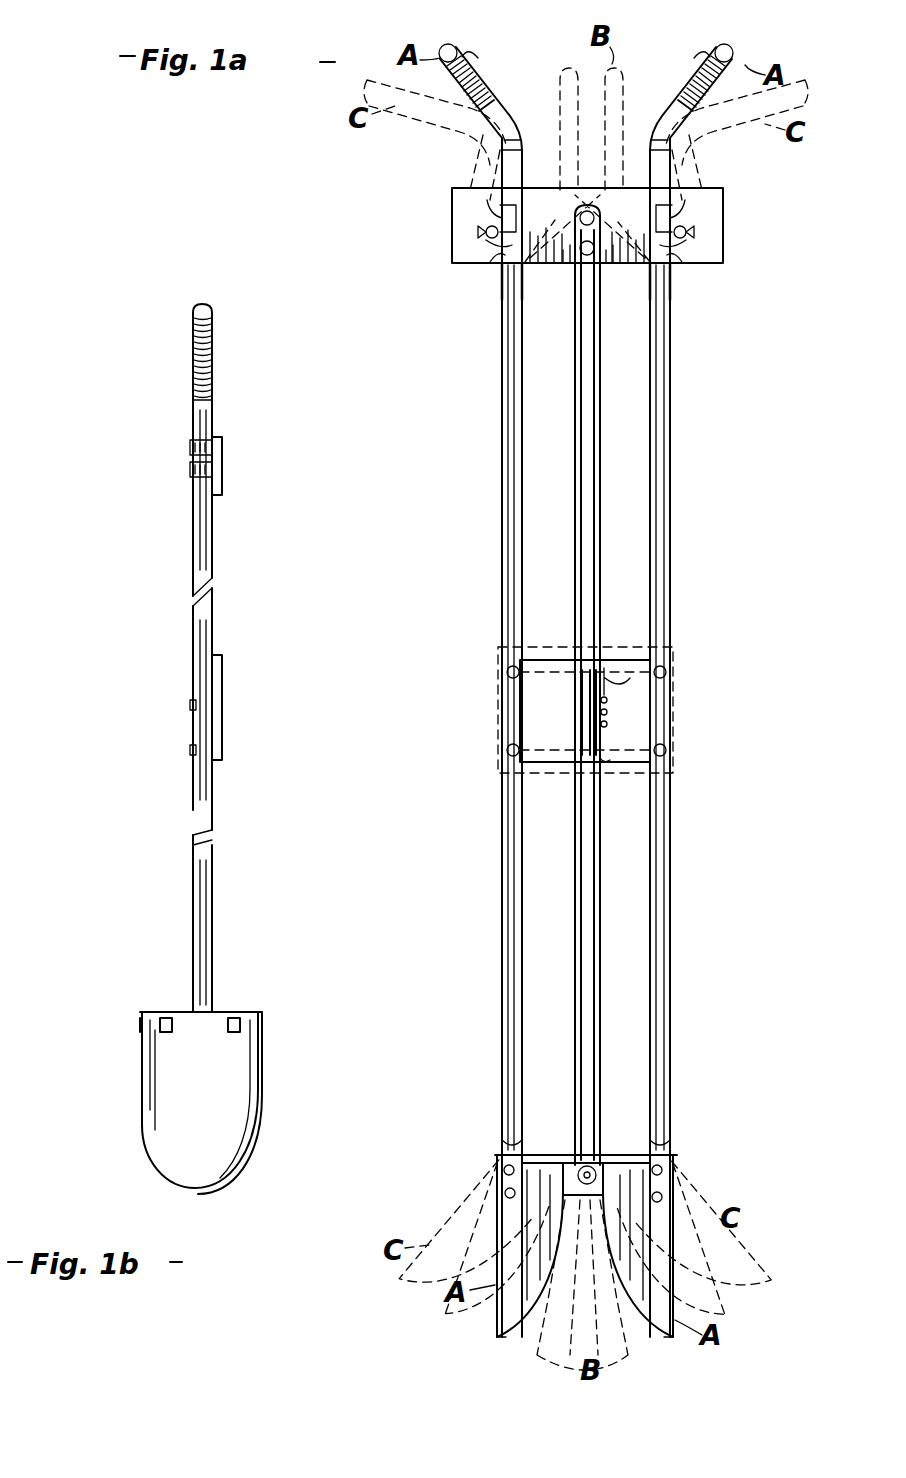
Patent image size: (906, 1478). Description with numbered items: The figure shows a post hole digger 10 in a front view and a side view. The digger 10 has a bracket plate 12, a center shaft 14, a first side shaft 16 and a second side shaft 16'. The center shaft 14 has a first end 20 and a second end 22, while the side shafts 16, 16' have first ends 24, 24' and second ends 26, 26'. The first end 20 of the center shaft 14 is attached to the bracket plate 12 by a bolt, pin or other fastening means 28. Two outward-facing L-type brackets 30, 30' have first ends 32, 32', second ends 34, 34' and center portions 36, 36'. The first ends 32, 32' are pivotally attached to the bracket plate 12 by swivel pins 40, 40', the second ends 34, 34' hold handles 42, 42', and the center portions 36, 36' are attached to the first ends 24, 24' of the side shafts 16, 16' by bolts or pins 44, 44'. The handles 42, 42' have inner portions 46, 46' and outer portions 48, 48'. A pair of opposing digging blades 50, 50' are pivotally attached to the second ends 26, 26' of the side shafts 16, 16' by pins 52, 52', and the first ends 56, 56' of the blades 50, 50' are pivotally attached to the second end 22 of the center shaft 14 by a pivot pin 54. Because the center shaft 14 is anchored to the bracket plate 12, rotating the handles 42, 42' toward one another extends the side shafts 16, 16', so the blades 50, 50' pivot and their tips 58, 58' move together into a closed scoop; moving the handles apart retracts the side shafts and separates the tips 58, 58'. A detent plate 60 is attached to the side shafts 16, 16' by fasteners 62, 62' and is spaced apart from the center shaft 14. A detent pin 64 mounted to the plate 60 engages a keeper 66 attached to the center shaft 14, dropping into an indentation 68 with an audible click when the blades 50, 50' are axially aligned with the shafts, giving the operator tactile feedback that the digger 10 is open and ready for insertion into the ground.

In FIG. 1a, the post hole digger 10 is at (743, 397).
In FIG. 1a, the bracket plate 12 is at (528, 186).
In FIG. 1b, the bracket plate 12 is at (222, 458).
In FIG. 1a, the center shaft 14 is at (576, 387).
In FIG. 1a, the first side shaft 16 is at (482, 763).
In FIG. 1a, the second side shaft 16' is at (691, 763).
In FIG. 1b, the second side shaft 16' is at (176, 658).
In FIG. 1a, the first end of center shaft 20 is at (562, 266).
In FIG. 1a, the second end of center shaft 22 is at (560, 1156).
In FIG. 1a, the first end of first side shaft 24 is at (485, 301).
In FIG. 1b, the first end of first side shaft 24 is at (175, 487).
In FIG. 1a, the first end of second side shaft 24' is at (694, 301).
In FIG. 1a, the second end of first side shaft 26 is at (479, 1135).
In FIG. 1a, the second end of second side shaft 26' is at (694, 1127).
In FIG. 1b, the second end of second side shaft 26' is at (234, 988).
In FIG. 1a, the fastening means 28 is at (598, 205).
In FIG. 1a, the first bracket 30 is at (459, 213).
In FIG. 1a, the second bracket 30' is at (724, 213).
In FIG. 1a, the first end of first bracket 32 is at (457, 257).
In FIG. 1a, the first end of second bracket 32' is at (726, 257).
In FIG. 1a, the second end of first bracket 34 is at (465, 193).
In FIG. 1a, the second end of second bracket 34' is at (716, 193).
In FIG. 1a, the center portion of first bracket 36 is at (555, 273).
In FIG. 1a, the center portion of second bracket 36' is at (622, 273).
In FIG. 1a, the swivel pin 40 is at (438, 235).
In FIG. 1a, the swivel pin 40' is at (741, 235).
In FIG. 1a, the handle 42 is at (466, 99).
In FIG. 1a, the handle 42' is at (726, 99).
In FIG. 1b, the handle 42' is at (234, 359).
In FIG. 1a, the bolt or pin 44 is at (476, 278).
In FIG. 1a, the bolt or pin 44' is at (697, 278).
In FIG. 1a, the inner portion of handle 46 is at (524, 100).
In FIG. 1a, the inner portion of handle 46' is at (663, 100).
In FIG. 1a, the outer portion of handle 48 is at (489, 58).
In FIG. 1a, the outer portion of handle 48' is at (688, 58).
In FIG. 1a, the digging blade 50 is at (500, 1246).
In FIG. 1a, the digging blade 50' is at (670, 1246).
In FIG. 1b, the digging blade 50' is at (163, 1103).
In FIG. 1a, the pin 52 is at (470, 1181).
In FIG. 1a, the pin 52' is at (702, 1180).
In FIG. 1b, the pin 52' is at (162, 1043).
In FIG. 1a, the pivot pin 54 is at (596, 1165).
In FIG. 1a, the first end of blade 56 is at (472, 1157).
In FIG. 1a, the first end of blade 56' is at (699, 1153).
In FIG. 1a, the tip of blade 58 is at (493, 1359).
In FIG. 1a, the tip of blade 58' is at (693, 1357).
In FIG. 1a, the detent plate 60 is at (558, 660).
In FIG. 1b, the detent plate 60 is at (222, 690).
In FIG. 1a, the fastener 62 is at (478, 714).
In FIG. 1a, the fastener 62' is at (698, 707).
In FIG. 1b, the fastener 62' is at (150, 722).
In FIG. 1a, the detent pin 64 is at (608, 712).
In FIG. 1a, the keeper 66 is at (600, 764).
In FIG. 1a, the indentation 68 is at (630, 678).